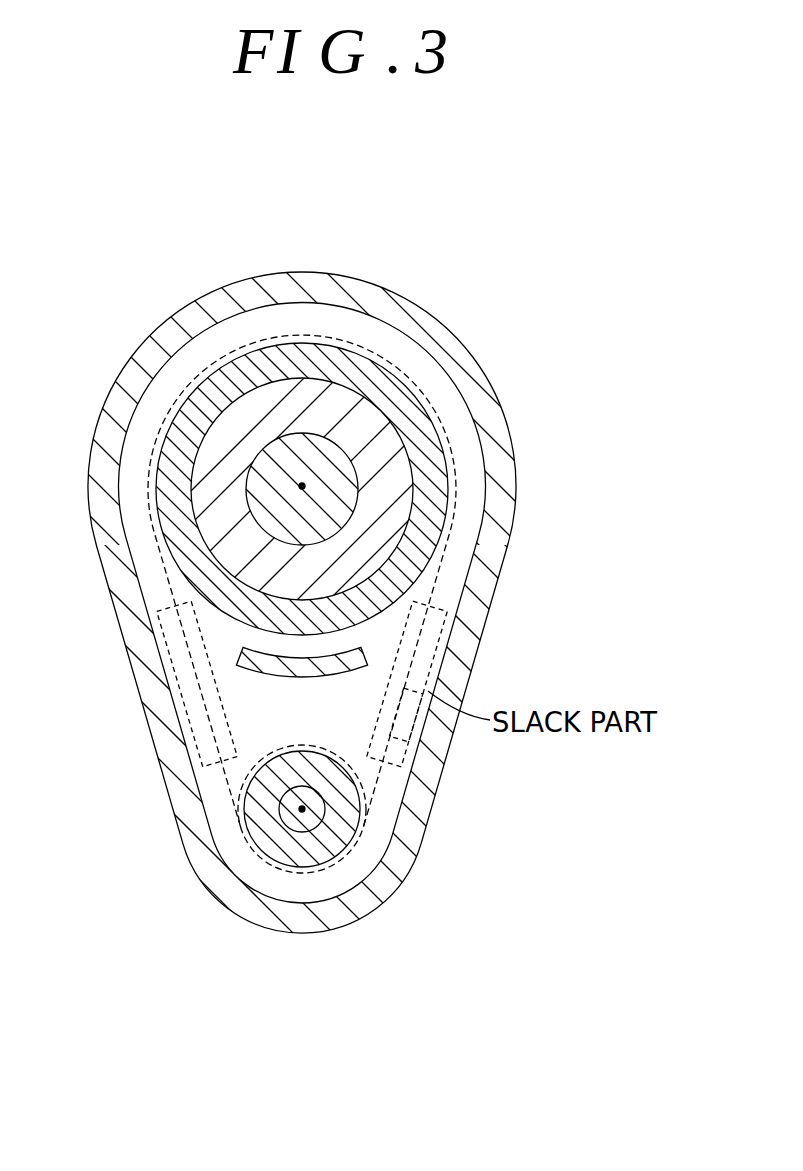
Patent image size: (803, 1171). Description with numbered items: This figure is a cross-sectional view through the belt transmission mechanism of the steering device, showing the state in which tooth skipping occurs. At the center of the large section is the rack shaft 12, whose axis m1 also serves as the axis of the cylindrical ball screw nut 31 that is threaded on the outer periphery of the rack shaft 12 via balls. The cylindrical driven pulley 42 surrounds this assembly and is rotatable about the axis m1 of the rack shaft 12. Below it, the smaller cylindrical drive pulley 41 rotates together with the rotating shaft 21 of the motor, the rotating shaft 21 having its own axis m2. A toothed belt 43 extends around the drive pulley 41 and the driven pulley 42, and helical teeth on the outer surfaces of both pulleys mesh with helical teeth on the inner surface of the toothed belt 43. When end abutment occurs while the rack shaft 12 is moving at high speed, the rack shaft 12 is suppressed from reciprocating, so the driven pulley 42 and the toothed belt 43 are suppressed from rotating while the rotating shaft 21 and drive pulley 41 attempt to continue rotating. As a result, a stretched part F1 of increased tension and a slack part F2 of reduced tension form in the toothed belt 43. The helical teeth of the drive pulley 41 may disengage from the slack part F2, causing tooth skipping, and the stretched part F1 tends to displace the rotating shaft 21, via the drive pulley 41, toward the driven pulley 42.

The rack shaft 12 is at (257, 492).
The rotating shaft 21 is at (302, 806).
The ball screw nut 31 is at (220, 442).
The drive pulley 41 is at (246, 800).
The driven pulley 42 is at (195, 373).
The toothed belt 43 is at (423, 753).
The stretched part F1 is at (156, 652).
The slack part F2 is at (458, 643).
The axis of the rack shaft m1 is at (303, 490).
The axis of the rotating shaft m2 is at (302, 812).